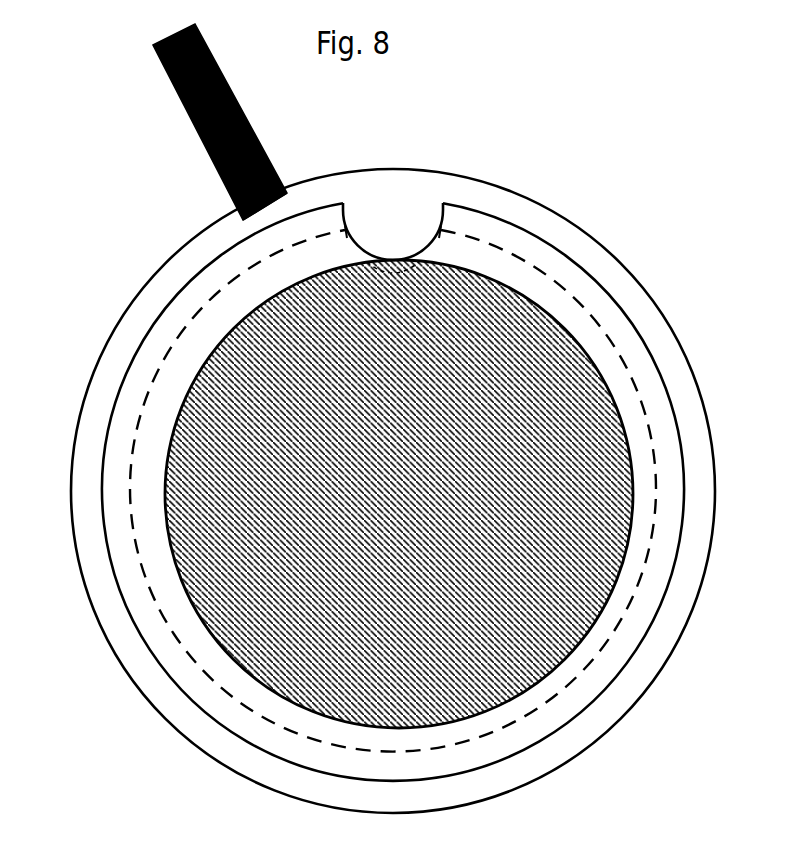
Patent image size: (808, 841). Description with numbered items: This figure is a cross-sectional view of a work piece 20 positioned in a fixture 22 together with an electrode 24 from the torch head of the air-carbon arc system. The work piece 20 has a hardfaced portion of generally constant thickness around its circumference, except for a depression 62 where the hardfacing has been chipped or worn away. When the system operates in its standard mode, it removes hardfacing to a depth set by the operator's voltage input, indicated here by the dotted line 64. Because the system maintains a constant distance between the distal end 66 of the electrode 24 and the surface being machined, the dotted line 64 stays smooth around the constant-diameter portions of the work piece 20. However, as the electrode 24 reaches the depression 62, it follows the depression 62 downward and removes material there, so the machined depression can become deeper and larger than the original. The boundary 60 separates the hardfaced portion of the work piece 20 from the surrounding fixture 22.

The work piece 20 is at (573, 578).
The fixture 22 is at (715, 498).
The electrode 24 is at (203, 147).
The inner ring boundary 60 is at (677, 417).
The depression 62 is at (393, 214).
The dotted line 64 is at (613, 647).
The distal end 66 is at (258, 220).